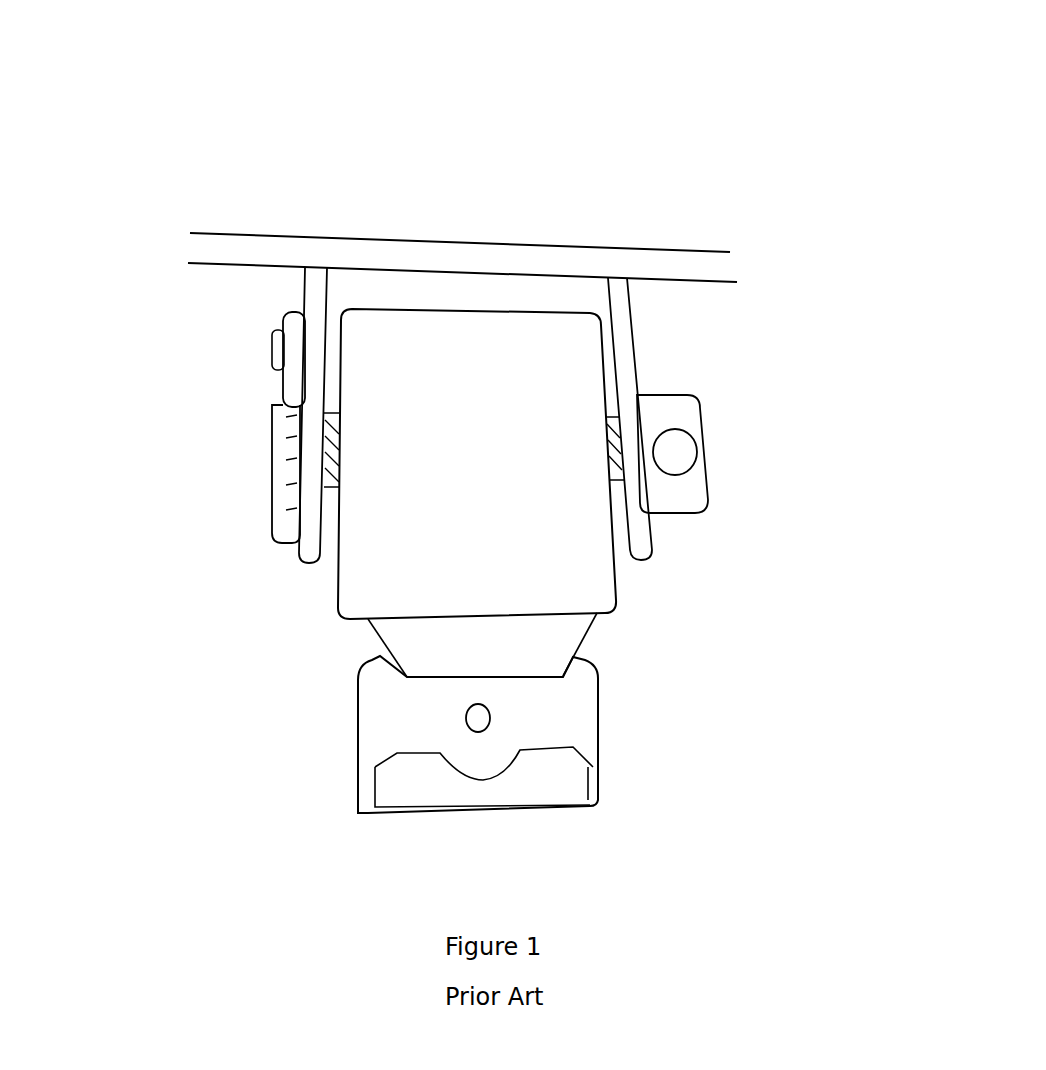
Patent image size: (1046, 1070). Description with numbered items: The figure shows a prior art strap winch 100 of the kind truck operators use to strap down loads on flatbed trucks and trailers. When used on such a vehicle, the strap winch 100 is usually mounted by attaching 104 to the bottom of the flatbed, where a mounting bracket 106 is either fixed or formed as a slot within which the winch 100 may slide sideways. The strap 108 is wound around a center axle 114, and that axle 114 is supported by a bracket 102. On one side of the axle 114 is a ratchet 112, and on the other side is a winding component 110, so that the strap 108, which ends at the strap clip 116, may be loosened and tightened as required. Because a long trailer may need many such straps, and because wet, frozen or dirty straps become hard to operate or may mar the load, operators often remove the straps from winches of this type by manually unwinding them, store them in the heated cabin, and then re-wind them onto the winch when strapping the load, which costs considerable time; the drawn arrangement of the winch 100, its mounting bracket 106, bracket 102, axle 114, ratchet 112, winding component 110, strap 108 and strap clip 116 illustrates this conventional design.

The strap winch 100 is at (785, 118).
The bracket 102 is at (632, 380).
The attaching 104 is at (321, 313).
The mounting bracket 106 is at (403, 258).
The strap 108 is at (496, 423).
The winding component 110 is at (700, 470).
The ratchet 112 is at (285, 455).
The center axle 114 is at (625, 478).
The strap clip 116 is at (383, 738).